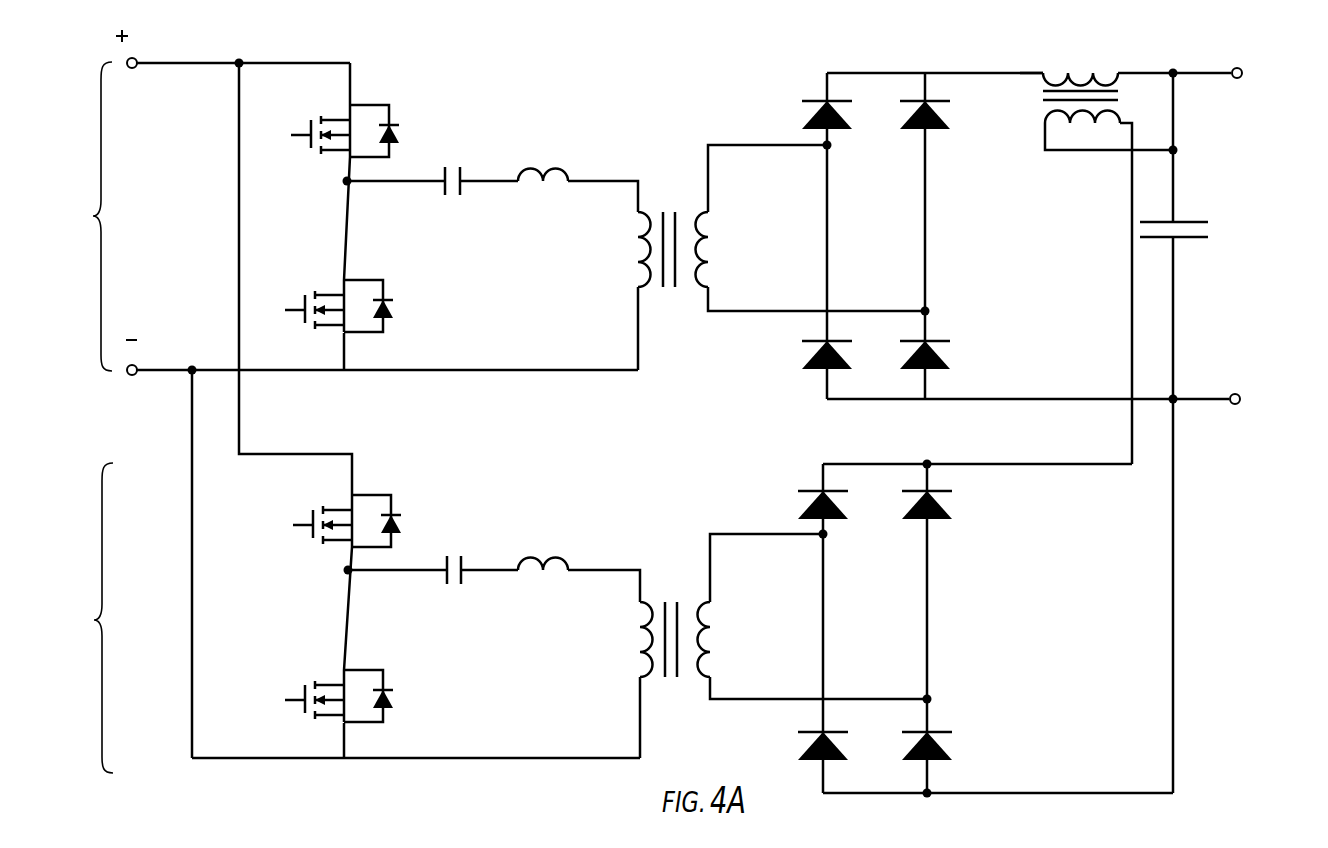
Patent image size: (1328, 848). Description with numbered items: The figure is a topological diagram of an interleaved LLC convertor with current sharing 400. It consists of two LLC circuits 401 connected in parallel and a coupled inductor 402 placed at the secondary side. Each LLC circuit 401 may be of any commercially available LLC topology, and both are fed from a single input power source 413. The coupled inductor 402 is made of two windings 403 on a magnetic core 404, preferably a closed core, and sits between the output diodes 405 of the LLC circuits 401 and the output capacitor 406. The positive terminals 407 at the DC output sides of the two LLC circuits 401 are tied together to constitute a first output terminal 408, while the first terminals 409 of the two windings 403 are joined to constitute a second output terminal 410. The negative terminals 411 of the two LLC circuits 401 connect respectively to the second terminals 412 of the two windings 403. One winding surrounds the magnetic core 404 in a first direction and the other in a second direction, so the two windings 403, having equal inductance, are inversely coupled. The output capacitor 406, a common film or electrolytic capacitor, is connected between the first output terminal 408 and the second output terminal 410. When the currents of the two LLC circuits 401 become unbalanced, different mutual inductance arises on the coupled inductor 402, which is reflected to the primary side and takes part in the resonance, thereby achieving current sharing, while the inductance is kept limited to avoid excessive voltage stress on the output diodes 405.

The interleaved LLC convertor with current sharing 400 is at (1236, 34).
The LLC circuit 401 is at (352, 416).
The coupled inductor 402 is at (1026, 93).
The windings 403 is at (1090, 112).
The magnetic core 404 is at (1118, 99).
The output diode 405 is at (888, 121).
The output capacitor 406 is at (1188, 239).
The positive terminals 407 is at (835, 400).
The first output terminal 408 is at (1225, 398).
The first terminals of the windings 409 is at (1122, 72).
The second output terminal 410 is at (1226, 73).
The negative terminals 411 is at (843, 73).
The second terminals of the windings 412 is at (1040, 72).
The single input power source 413 is at (116, 40).